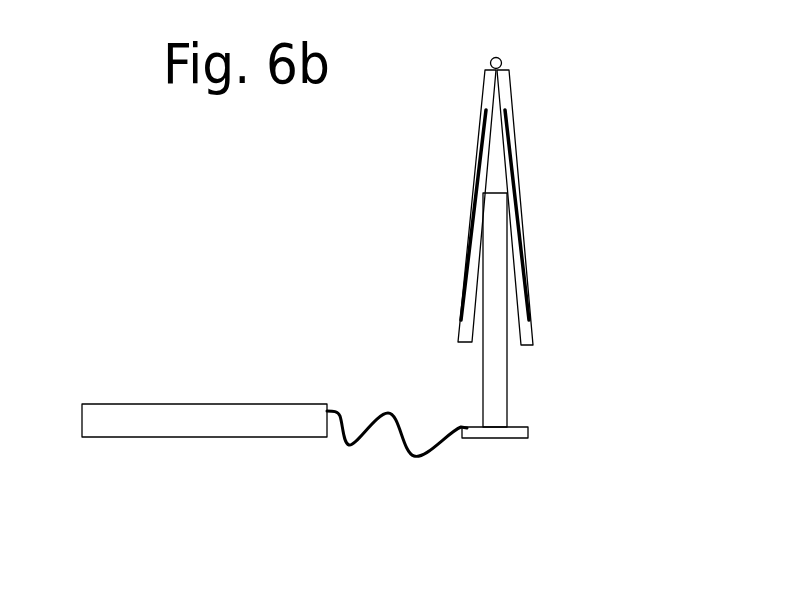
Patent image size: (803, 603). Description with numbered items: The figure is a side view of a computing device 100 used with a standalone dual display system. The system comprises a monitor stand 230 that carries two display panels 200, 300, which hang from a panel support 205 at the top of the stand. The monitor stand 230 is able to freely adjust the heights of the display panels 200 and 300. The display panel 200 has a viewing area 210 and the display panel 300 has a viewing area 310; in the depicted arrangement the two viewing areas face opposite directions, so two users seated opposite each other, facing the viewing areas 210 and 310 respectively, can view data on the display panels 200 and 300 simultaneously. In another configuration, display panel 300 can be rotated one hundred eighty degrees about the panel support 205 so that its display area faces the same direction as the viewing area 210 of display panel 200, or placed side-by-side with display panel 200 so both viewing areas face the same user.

The computing device 100 is at (222, 404).
The display panel 200 is at (486, 73).
The panel support 205 is at (505, 56).
The viewing area 210 is at (476, 212).
The monitor stand 230 is at (518, 377).
The display panel 300 is at (525, 334).
The viewing area 310 is at (520, 180).